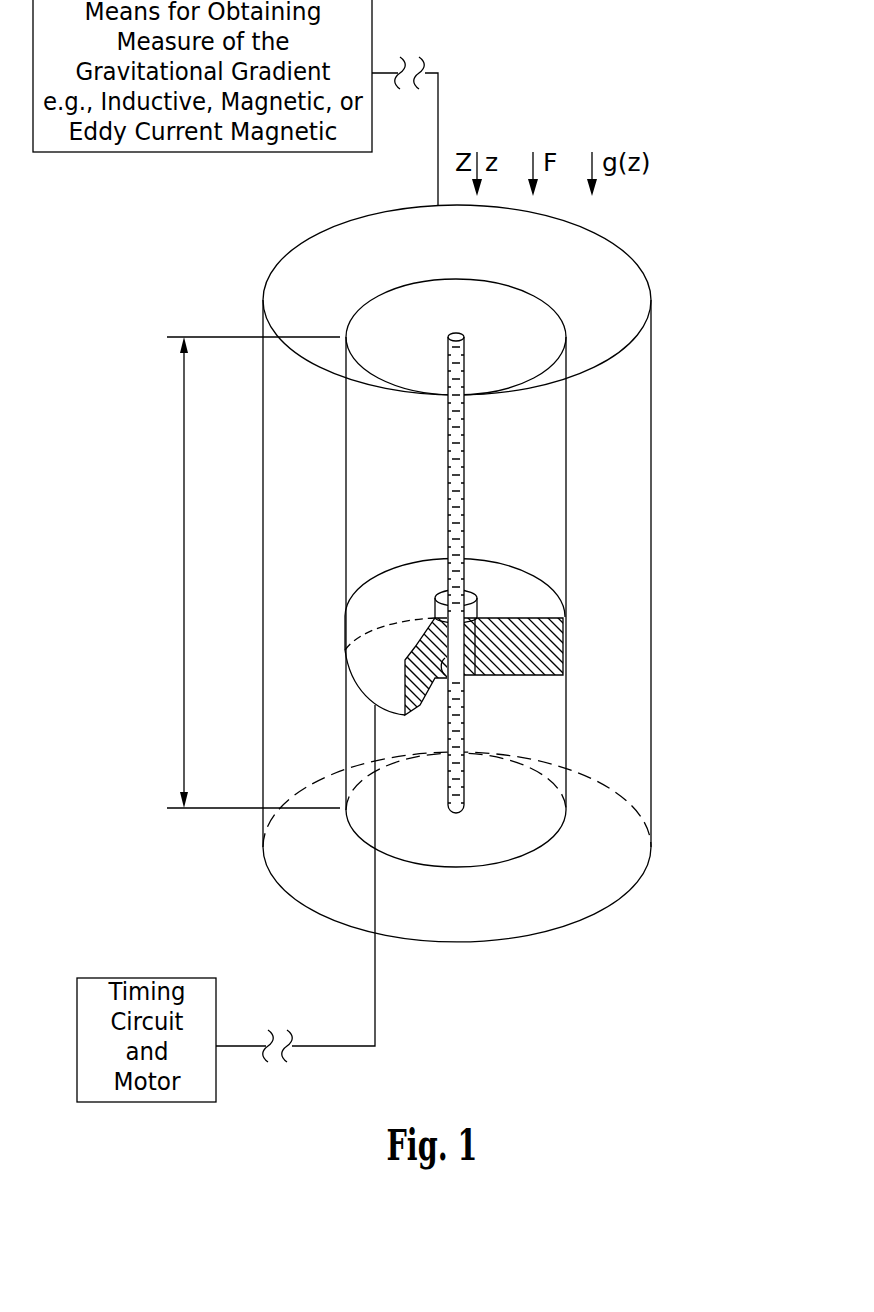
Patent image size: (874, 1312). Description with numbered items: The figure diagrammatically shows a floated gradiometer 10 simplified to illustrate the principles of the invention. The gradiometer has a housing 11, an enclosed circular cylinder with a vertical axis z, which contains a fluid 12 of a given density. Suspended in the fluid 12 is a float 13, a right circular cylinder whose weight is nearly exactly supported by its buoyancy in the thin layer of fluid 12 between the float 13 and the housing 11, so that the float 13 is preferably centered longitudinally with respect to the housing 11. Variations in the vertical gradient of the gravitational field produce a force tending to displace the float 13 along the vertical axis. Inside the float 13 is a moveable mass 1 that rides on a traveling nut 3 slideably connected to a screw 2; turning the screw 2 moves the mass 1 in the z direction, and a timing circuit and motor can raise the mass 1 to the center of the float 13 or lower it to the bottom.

The moveable mass 1 is at (490, 672).
The screw 2 is at (466, 492).
The traveling nut 3 is at (467, 603).
The floated gradiometer 10 is at (281, 244).
The housing 11 is at (651, 430).
The fluid 12 is at (637, 530).
The float 13 is at (566, 710).